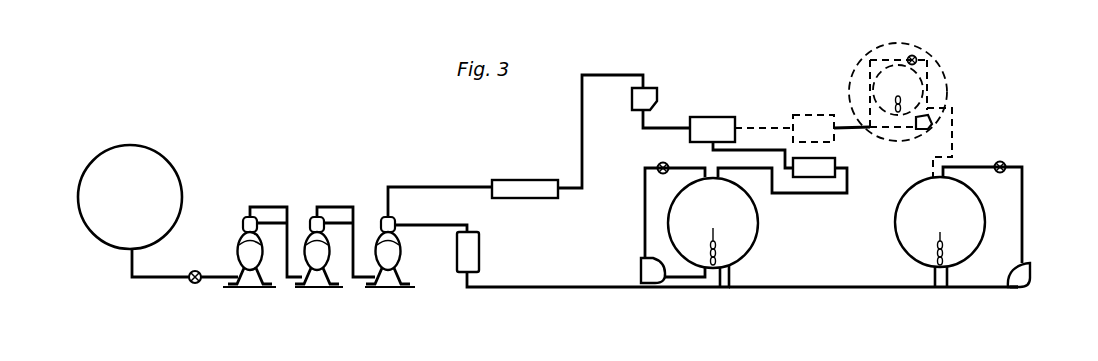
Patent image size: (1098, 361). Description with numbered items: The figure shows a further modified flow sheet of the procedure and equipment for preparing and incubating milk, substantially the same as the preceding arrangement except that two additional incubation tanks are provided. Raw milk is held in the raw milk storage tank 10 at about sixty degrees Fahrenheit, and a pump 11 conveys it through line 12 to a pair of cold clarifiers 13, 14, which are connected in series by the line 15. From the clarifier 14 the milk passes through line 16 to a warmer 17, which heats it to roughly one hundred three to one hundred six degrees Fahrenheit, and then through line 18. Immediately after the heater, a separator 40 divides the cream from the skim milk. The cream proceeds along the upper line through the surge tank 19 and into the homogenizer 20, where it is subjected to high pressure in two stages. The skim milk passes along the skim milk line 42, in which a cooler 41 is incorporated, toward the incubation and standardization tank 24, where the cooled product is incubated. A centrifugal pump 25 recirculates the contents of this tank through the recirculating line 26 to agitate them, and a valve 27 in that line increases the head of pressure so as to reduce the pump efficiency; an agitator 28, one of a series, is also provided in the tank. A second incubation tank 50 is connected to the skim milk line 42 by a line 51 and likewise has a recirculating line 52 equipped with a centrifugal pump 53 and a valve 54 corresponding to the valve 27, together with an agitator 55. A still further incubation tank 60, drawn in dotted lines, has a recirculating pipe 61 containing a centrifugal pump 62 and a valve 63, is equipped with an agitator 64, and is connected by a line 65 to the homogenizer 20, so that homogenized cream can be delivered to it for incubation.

The raw milk storage tank 10 is at (130, 145).
The pump 11 is at (195, 283).
The line 12 is at (158, 276).
The cold clarifier 13 is at (240, 246).
The cold clarifier 14 is at (310, 228).
The line 15 is at (283, 258).
The line 16 is at (357, 224).
The warmer 17 is at (516, 188).
The line 18 is at (458, 187).
The surge tank 19 is at (656, 96).
The homogenizer 20 is at (710, 118).
The incubation and standardization tank 24 is at (758, 238).
The centrifugal pump 25 is at (641, 270).
The recirculating line 26 is at (645, 204).
The valve 27 is at (664, 162).
The agitator 28 is at (713, 228).
The separator 40 is at (402, 258).
The cooler 41 is at (479, 250).
The skim milk line 42 is at (630, 288).
The second incubation tank 50 is at (895, 221).
The line 51 is at (853, 288).
The recirculating line 52 is at (1023, 204).
The centrifugal pump 53 is at (1030, 275).
The valve 54 is at (1000, 162).
The agitator 55 is at (940, 232).
The incubation tank 60 is at (918, 80).
The recirculating pipe 61 is at (928, 88).
The centrifugal pump 62 is at (930, 123).
The valve 63 is at (916, 56).
The agitator 64 is at (897, 94).
The line 65 is at (846, 122).